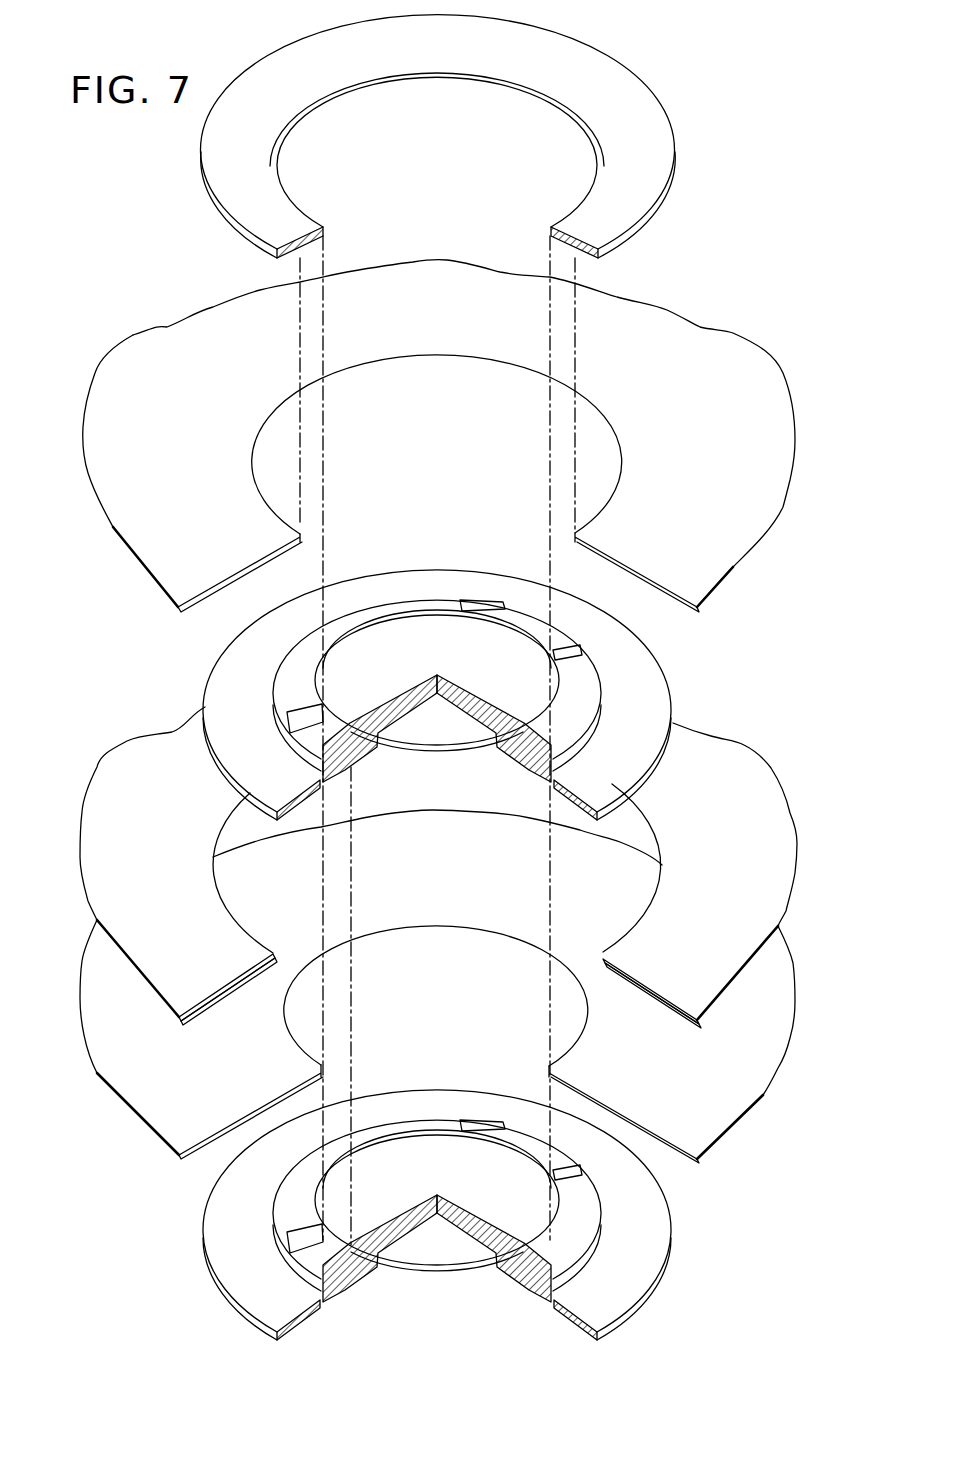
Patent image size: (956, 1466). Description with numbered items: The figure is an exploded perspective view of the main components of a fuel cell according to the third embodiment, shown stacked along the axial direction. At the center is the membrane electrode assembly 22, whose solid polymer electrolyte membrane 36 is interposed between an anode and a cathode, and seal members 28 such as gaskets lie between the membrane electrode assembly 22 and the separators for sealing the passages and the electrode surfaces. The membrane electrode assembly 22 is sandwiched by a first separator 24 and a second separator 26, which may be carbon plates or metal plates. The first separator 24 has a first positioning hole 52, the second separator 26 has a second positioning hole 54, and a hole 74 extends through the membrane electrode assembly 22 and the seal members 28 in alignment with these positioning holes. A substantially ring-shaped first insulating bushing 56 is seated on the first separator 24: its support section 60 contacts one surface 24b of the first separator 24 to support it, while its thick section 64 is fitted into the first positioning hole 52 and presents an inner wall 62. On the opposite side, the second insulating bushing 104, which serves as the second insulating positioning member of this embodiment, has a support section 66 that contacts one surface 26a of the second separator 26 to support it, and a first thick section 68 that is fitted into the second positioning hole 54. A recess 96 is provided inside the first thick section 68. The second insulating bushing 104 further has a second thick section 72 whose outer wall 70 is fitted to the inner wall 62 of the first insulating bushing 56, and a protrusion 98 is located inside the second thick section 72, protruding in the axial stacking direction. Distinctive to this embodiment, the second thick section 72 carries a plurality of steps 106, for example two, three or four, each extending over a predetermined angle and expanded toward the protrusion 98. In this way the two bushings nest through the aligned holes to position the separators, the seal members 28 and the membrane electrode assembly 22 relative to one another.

The membrane electrode assembly 22 is at (454, 877).
The first separator 24 is at (442, 436).
The one surface of the first separator 24b is at (693, 562).
The second separator 26 is at (458, 1041).
The one surface of the second separator 26a is at (737, 1100).
The seal members 28 is at (735, 762).
The solid polymer electrolyte membrane 36 is at (662, 993).
The first positioning hole 52 is at (598, 440).
The second positioning hole 54 is at (585, 1020).
The first insulating bushing 56 is at (456, 131).
The support section 60 is at (632, 212).
The inner wall 62 is at (545, 90).
The thick section 64 is at (552, 250).
The support section 66 is at (634, 761).
The first thick section 68 is at (536, 788).
The outer wall 70 is at (592, 729).
The second thick section 72 is at (588, 683).
The hole 74 is at (648, 868).
The recess 96 is at (508, 763).
The protrusion 98 is at (398, 635).
The second insulating bushing 104 is at (450, 939).
The steps 106 is at (500, 605).